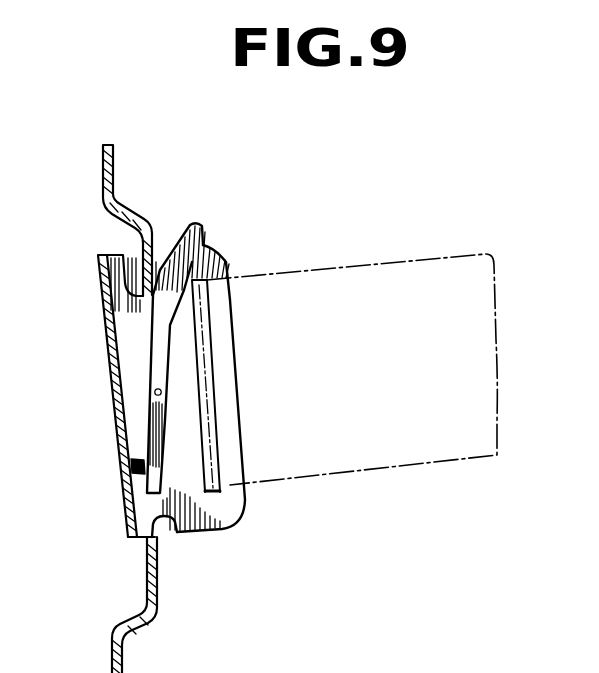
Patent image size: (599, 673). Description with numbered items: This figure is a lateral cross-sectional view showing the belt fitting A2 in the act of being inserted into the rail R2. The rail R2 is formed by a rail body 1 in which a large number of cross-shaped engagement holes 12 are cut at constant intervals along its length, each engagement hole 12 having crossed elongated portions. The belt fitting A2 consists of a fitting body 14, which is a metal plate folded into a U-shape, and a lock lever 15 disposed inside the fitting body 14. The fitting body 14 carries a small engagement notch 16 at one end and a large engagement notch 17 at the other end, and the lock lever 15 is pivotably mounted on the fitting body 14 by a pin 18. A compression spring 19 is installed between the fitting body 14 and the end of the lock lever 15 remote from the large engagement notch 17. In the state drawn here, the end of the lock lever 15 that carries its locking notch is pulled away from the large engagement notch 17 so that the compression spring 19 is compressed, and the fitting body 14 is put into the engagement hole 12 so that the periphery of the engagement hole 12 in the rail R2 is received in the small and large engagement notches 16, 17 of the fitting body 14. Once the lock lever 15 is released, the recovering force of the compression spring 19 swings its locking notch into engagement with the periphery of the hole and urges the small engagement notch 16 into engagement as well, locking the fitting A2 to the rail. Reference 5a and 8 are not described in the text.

The rail body 1 is at (157, 587).
The clip head 5a is at (167, 243).
The trim panel 8 is at (420, 258).
The cross-shaped engagement hole 12 is at (157, 528).
The fitting body 14 is at (229, 504).
The lock lever 15 is at (157, 314).
The small engagement notch 16 is at (157, 527).
The large engagement notch 17 is at (138, 265).
The pin 18 is at (153, 391).
The compression spring 19 is at (128, 478).
The rail R2 is at (138, 197).
The belt fitting A2 is at (228, 229).